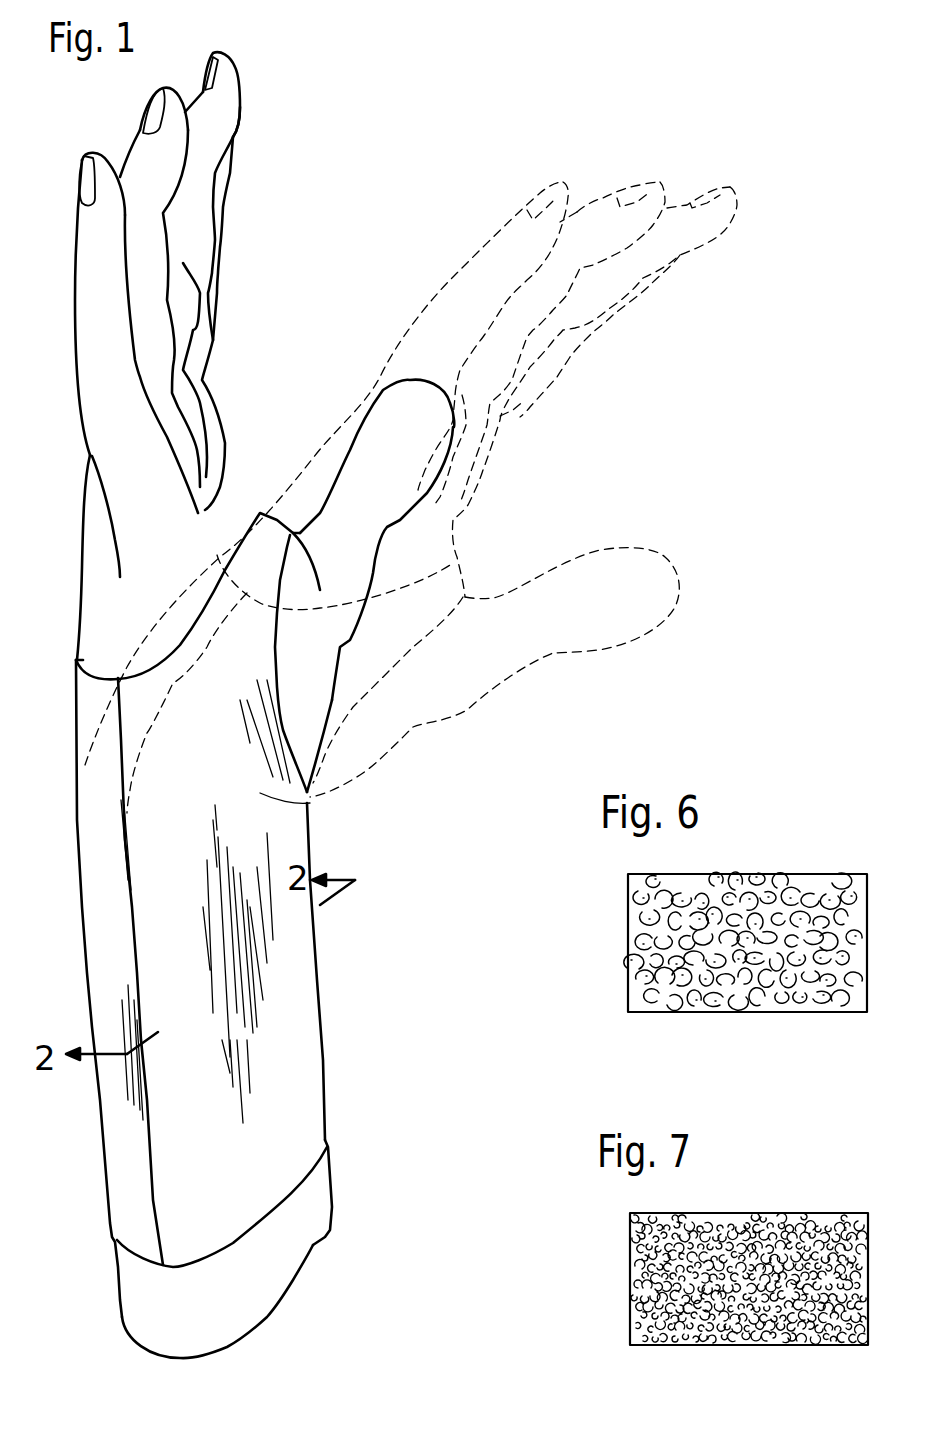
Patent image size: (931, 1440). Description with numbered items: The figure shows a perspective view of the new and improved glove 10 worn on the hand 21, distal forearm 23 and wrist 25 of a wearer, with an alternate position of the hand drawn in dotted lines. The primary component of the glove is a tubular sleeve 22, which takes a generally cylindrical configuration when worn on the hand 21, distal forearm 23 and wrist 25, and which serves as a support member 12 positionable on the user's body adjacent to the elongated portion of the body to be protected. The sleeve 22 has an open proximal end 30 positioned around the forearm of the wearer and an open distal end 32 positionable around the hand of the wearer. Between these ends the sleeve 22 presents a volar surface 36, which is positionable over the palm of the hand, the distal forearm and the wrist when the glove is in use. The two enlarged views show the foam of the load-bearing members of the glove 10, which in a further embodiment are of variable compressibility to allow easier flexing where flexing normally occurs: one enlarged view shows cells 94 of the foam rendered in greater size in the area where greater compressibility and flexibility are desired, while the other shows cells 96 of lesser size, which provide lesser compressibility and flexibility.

In FIG. 1, the glove 10 is at (109, 826).
In FIG. 1, the support member 12 is at (287, 1000).
In FIG. 1, the hand 21 is at (80, 430).
In FIG. 1, the tubular sleeve 22 is at (293, 1100).
In FIG. 1, the distal forearm 23 is at (140, 1283).
In FIG. 1, the wrist 25 is at (277, 840).
In FIG. 1, the open proximal end 30 is at (257, 1223).
In FIG. 1, the open distal end 32 is at (208, 607).
In FIG. 1, the volar surface 36 is at (313, 803).
In FIG. 6, the cells 94 is at (740, 877).
In FIG. 7, the cells 96 is at (733, 1213).